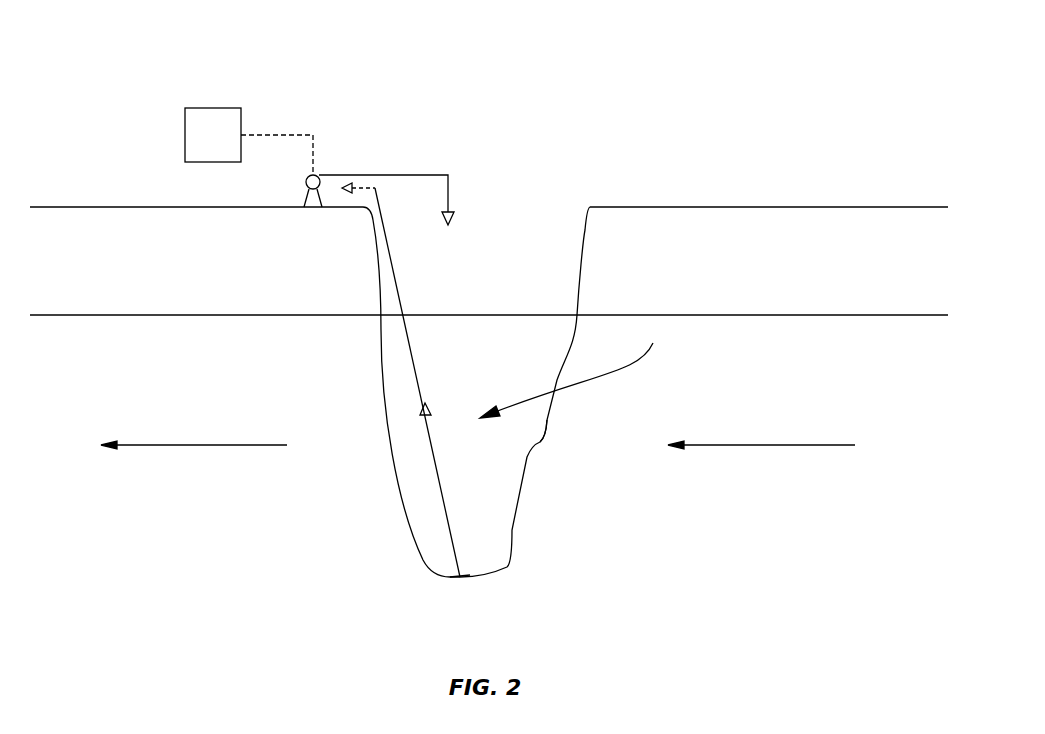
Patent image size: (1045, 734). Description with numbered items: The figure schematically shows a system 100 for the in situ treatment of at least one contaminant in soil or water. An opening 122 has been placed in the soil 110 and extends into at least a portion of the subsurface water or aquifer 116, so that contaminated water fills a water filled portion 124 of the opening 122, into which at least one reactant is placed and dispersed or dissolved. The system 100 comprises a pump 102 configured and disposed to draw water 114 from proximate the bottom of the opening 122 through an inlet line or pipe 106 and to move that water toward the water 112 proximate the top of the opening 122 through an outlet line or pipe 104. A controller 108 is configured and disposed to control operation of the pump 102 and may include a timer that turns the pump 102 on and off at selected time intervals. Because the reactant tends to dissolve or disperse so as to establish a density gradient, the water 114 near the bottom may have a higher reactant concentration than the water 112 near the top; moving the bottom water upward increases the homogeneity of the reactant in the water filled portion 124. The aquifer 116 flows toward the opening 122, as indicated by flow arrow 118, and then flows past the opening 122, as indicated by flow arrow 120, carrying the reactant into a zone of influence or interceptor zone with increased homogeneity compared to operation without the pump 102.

The system 100 is at (297, 66).
The pump 102 is at (314, 175).
The outlet line or pipe 104 is at (427, 175).
The inlet line or pipe 106 is at (403, 335).
The controller 108 is at (212, 115).
The soil 110 is at (753, 207).
The water proximate the top of opening 112 is at (489, 337).
The water proximate the bottom of opening 114 is at (480, 562).
The subsurface water or aquifer 116 is at (760, 366).
The flow arrow 118 is at (775, 445).
The flow arrow 120 is at (207, 445).
The opening 122 is at (540, 442).
The water filled portion 124 is at (576, 370).